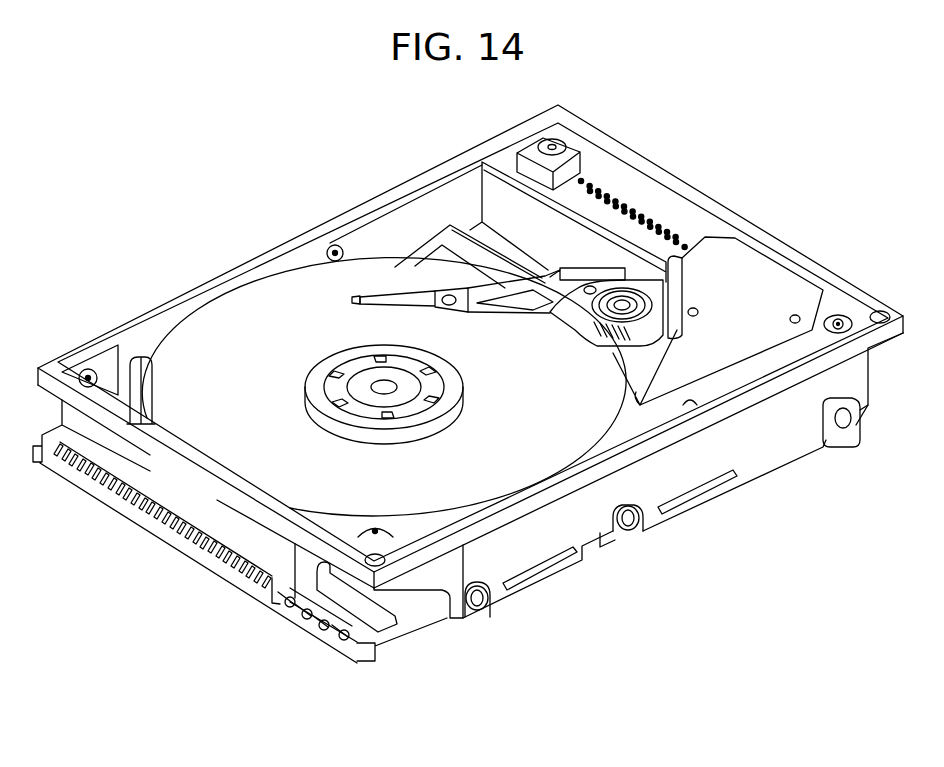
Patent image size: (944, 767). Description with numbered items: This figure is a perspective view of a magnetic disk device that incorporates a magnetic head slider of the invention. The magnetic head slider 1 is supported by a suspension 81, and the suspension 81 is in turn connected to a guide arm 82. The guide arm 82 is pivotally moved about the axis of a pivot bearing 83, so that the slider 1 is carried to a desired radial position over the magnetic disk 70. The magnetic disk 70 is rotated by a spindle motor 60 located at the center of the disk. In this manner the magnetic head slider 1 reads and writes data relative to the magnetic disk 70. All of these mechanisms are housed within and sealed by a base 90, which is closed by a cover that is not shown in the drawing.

The magnetic head slider 1 is at (355, 300).
The spindle motor 60 is at (320, 397).
The magnetic disk 70 is at (207, 350).
The suspension 81 is at (405, 297).
The guide arm 82 is at (510, 314).
The pivot bearing 83 is at (648, 313).
The base 90 is at (271, 248).